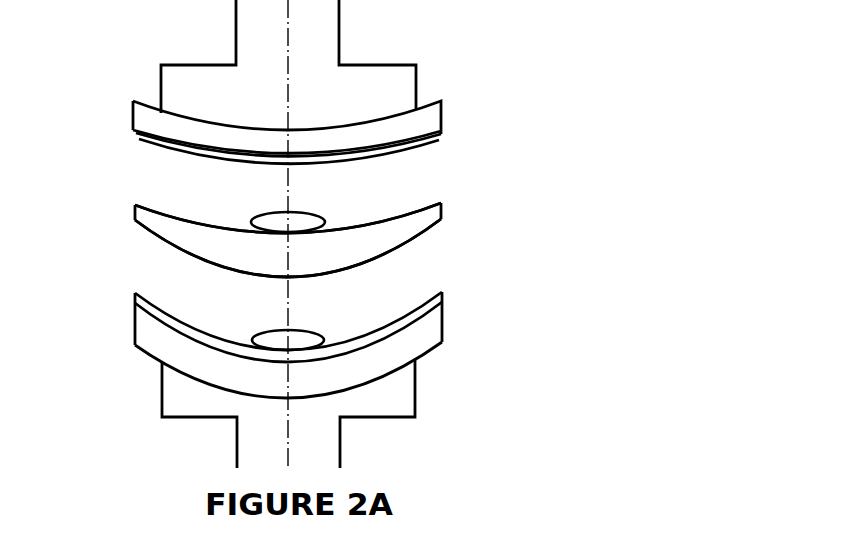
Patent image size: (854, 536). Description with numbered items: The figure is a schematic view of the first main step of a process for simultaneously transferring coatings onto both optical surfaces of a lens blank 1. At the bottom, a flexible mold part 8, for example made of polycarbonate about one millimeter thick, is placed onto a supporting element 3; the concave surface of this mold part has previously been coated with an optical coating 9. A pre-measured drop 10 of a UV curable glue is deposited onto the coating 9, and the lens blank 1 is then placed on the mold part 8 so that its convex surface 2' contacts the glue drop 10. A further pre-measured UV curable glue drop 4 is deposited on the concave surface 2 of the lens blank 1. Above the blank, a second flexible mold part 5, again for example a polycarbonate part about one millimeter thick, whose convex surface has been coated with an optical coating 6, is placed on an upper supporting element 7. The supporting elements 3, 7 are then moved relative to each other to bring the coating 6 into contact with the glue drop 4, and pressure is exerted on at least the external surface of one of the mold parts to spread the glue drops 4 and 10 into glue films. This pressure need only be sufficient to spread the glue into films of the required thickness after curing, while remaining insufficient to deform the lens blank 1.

The lens blank 1 is at (153, 219).
The concave surface 2 is at (245, 202).
The convex surface 2' is at (245, 257).
The supporting element 3 is at (400, 405).
The glue drop 4 is at (300, 222).
The flexible mold part 5 is at (430, 110).
The optical coating 6 is at (140, 137).
The supporting element 7 is at (325, 25).
The flexible mold part 8 is at (430, 328).
The optical coating 9 is at (135, 300).
The glue drop 10 is at (302, 338).